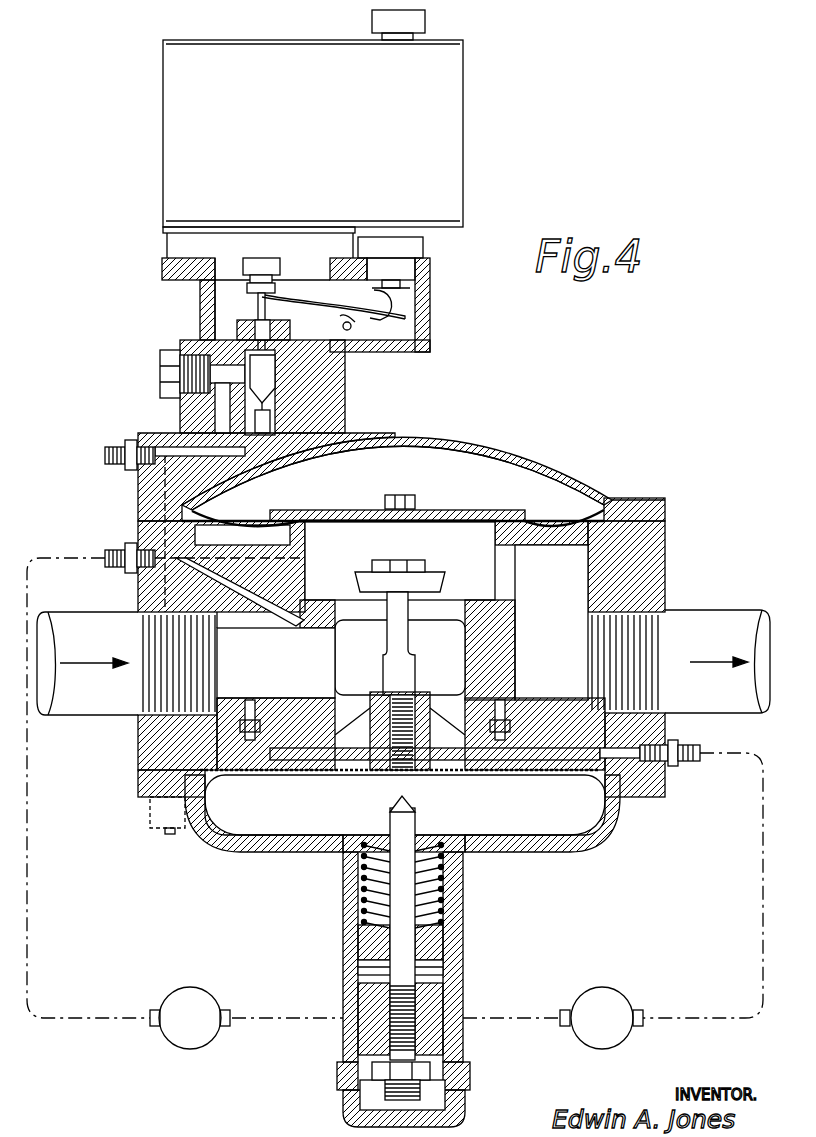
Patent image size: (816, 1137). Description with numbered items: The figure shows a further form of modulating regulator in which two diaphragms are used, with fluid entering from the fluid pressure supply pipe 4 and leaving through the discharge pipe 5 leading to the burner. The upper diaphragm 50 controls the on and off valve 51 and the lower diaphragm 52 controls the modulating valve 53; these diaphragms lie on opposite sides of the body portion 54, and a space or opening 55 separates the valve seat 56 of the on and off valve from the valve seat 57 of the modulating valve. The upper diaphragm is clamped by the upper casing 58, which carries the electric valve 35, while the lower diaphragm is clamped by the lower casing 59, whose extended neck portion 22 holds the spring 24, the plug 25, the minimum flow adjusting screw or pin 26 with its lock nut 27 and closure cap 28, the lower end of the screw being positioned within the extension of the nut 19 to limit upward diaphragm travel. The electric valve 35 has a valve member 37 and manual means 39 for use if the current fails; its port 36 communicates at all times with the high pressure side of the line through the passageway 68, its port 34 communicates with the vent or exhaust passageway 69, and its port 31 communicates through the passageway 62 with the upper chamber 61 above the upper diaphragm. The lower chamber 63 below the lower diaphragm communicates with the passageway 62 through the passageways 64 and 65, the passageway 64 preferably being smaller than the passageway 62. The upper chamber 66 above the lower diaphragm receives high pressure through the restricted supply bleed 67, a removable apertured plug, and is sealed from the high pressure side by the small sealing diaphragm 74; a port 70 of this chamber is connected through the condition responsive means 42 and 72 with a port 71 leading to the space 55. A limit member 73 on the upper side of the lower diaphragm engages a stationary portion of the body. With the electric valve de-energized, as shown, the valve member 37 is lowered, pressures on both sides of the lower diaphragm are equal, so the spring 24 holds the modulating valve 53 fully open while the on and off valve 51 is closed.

The fluid pressure supply pipe 4 is at (100, 612).
The discharge pipe 5 is at (725, 610).
The clamping member or nut 19 is at (420, 780).
The threaded neck portion 22 is at (463, 912).
The compression spring 24 is at (360, 890).
The plug 25 is at (445, 1000).
The minimum flow adjusting screw or pin 26 is at (395, 900).
The lock nut 27 is at (375, 1085).
The closure cap 28 is at (470, 1075).
The port of electric solenoid valve 31 is at (240, 352).
The lower port of electric valve 34 is at (272, 406).
The electric valve 35 is at (313, 149).
The vent or discharge port 36 is at (237, 330).
The valve member 37 is at (272, 375).
The manual means 39 is at (368, 20).
The condition responsive means 42 is at (622, 990).
The upper diaphragm 50 is at (548, 520).
The on and off valve 51 is at (505, 540).
The lower diaphragm 52 is at (575, 775).
The modulating valve 53 is at (358, 580).
The body portion 54 is at (655, 562).
The space or opening 55 is at (485, 598).
The valve seat of on and off valve 56 is at (488, 530).
The valve seat of modulating valve 57 is at (380, 610).
The upper casing 58 is at (563, 465).
The lower casing 59 is at (594, 850).
The upper chamber 61 is at (495, 483).
The passageway or port 62 is at (224, 493).
The lower chamber 63 is at (232, 825).
The port or passageway 64 is at (218, 797).
The port or passageway 65 is at (160, 743).
The upper chamber above lower diaphragm 66 is at (285, 765).
The restricted supply bleed 67 is at (255, 712).
The port or passageway 68 is at (280, 622).
The vent or exhaust port or passageway 69 is at (170, 437).
The port or passageway 70 is at (668, 741).
The port or passageway 71 is at (318, 553).
The condition responsive means 72 is at (192, 1050).
The limit member 73 is at (500, 745).
The small sealing diaphragm 74 is at (455, 700).